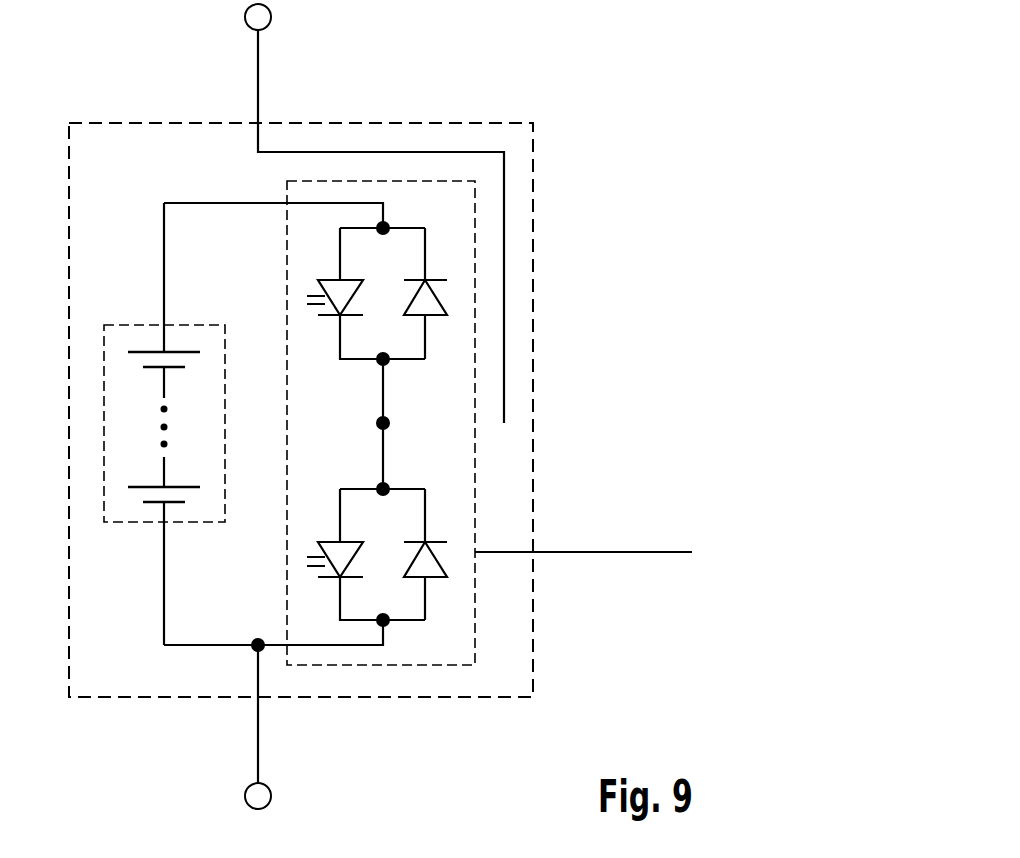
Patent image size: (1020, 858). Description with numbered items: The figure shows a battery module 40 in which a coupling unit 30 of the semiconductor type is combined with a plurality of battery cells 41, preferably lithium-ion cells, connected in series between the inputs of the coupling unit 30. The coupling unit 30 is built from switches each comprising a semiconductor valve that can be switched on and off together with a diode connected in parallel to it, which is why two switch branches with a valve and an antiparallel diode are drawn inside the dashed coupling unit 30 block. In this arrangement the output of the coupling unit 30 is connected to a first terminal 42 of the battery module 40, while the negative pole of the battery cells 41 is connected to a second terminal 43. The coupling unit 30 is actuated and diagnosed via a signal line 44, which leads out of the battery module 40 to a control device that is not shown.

The coupling unit 30 is at (475, 245).
The battery module 40 is at (533, 200).
The battery cells 41 is at (104, 438).
The first terminal 42 is at (271, 15).
The second terminal 43 is at (271, 794).
The signal line 44 is at (631, 552).